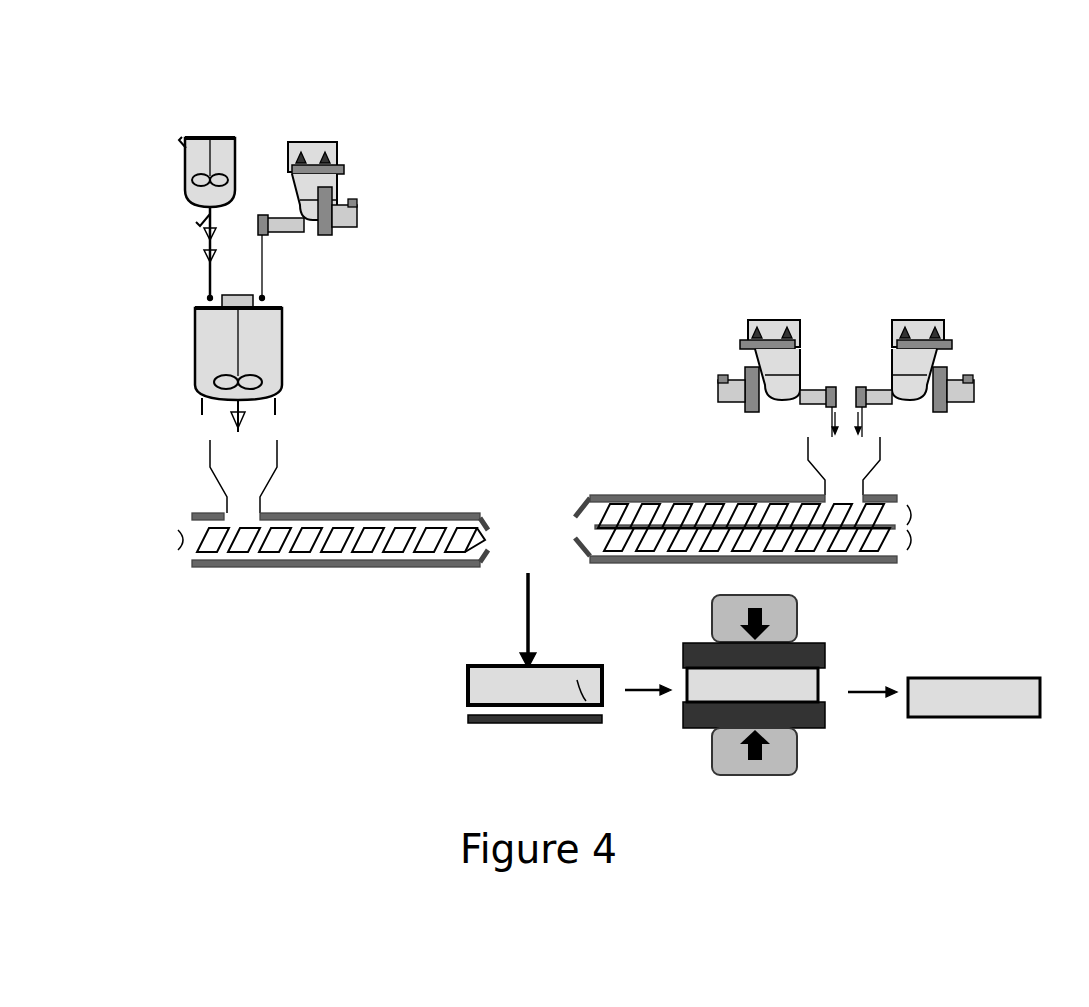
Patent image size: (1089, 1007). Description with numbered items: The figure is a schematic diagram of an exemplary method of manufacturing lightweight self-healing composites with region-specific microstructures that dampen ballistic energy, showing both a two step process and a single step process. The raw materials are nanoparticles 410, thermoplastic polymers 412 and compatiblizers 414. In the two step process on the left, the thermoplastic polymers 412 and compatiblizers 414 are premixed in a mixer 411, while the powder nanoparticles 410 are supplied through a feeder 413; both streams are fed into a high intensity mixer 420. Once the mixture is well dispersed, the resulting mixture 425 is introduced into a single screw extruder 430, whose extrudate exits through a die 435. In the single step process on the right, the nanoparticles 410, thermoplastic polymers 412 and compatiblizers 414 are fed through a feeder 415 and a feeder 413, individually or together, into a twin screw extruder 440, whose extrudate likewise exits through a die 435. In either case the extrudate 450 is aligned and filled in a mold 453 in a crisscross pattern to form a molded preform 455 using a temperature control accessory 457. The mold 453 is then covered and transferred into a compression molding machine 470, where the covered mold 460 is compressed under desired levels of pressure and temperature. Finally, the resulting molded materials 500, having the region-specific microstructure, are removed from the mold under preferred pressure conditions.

The nanoparticles 410 is at (313, 132).
The mixer 411 is at (187, 160).
The thermoplastic polymers 412 is at (220, 128).
The feeder 413 is at (318, 180).
The compatiblizers 414 is at (195, 128).
The feeder 415 is at (745, 345).
The high intensity mixer 420 is at (283, 335).
The resulting mixture 425 is at (232, 428).
The single screw extruder 430 is at (385, 515).
The die 435 is at (577, 535).
The twin screw extruder 440 is at (625, 500).
The extrudate 450 is at (525, 645).
The mold 453 is at (468, 680).
The molded preform 455 is at (596, 705).
The temperature control accessory 457 is at (468, 718).
The covered mold 460 is at (820, 690).
The compression molding machine 470 is at (825, 645).
The molded materials 500 is at (965, 678).